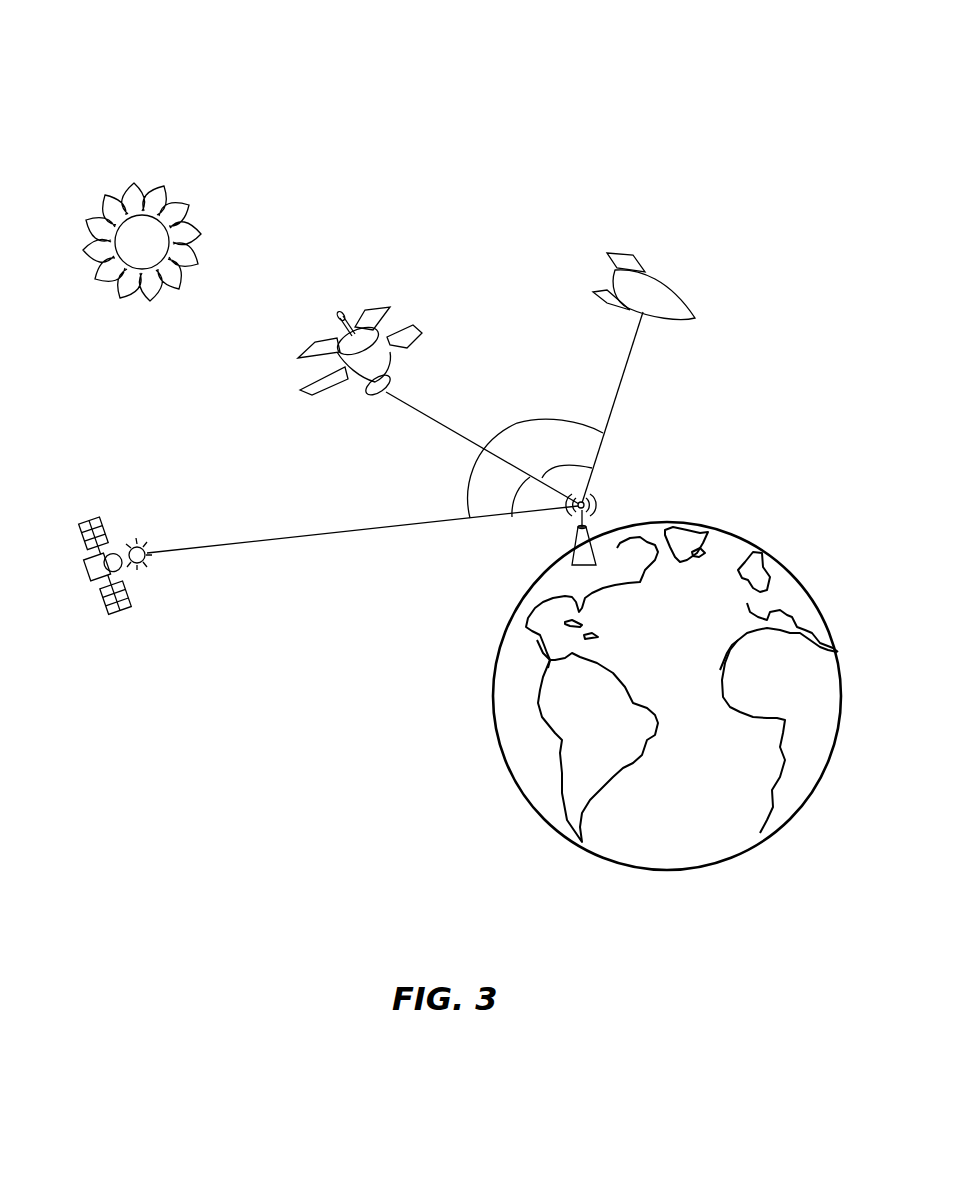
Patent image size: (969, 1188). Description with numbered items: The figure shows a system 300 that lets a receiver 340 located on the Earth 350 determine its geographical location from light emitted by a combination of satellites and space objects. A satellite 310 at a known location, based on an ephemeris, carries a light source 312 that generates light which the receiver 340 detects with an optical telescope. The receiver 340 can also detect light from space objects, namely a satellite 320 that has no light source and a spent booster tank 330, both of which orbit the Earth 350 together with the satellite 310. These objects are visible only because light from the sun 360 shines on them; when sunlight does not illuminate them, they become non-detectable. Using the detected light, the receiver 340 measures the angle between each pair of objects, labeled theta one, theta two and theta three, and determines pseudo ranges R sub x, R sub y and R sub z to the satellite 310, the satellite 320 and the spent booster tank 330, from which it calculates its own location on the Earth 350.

The system 300 is at (218, 66).
The satellite 310 is at (87, 518).
The light source 312 is at (145, 565).
The satellite 320 is at (408, 325).
The spent booster tank 330 is at (682, 294).
The receiver 340 is at (597, 540).
The Earth 350 is at (790, 573).
The sun 360 is at (189, 237).